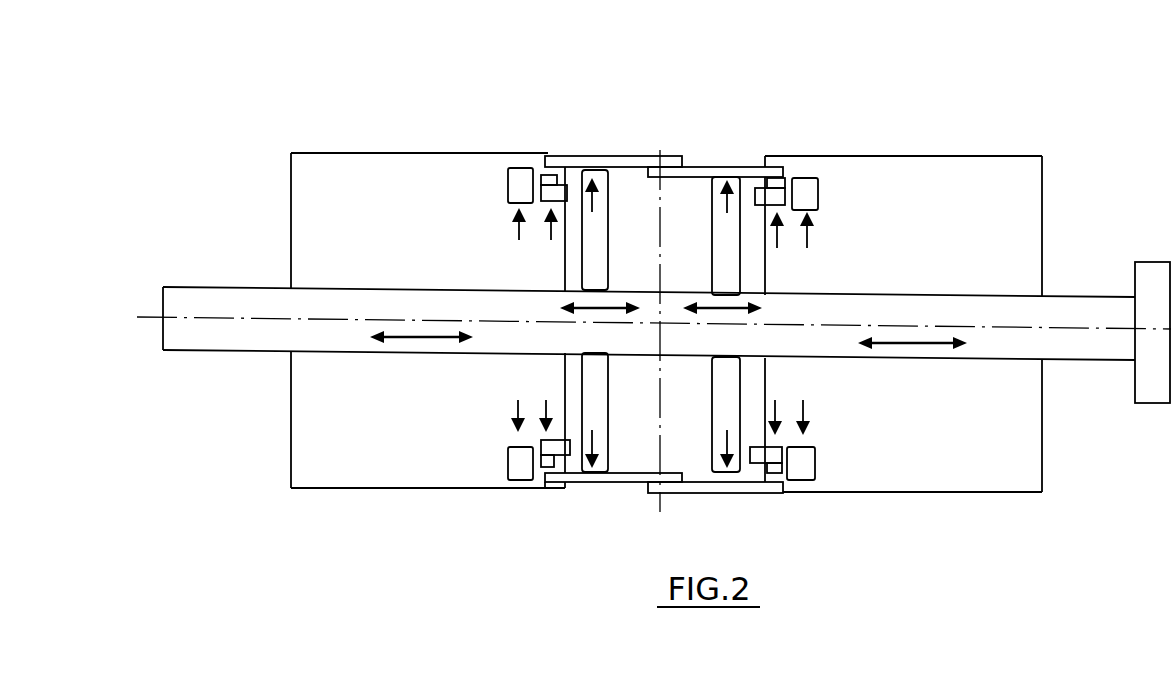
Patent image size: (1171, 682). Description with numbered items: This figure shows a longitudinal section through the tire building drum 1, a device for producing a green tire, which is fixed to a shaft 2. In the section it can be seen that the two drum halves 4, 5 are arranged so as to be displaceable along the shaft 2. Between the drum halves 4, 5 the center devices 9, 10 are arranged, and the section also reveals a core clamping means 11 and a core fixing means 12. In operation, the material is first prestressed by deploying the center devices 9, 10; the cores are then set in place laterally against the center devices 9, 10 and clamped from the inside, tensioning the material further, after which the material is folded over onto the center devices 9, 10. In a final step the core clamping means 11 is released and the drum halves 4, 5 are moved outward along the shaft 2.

The tire building drum 1 is at (895, 102).
The shaft 2 is at (835, 326).
The drum half 4 is at (365, 210).
The drum half 5 is at (853, 233).
The center device 9 is at (593, 237).
The center device 10 is at (720, 210).
The core clamping means 11 is at (513, 464).
The core fixing means 12 is at (565, 448).